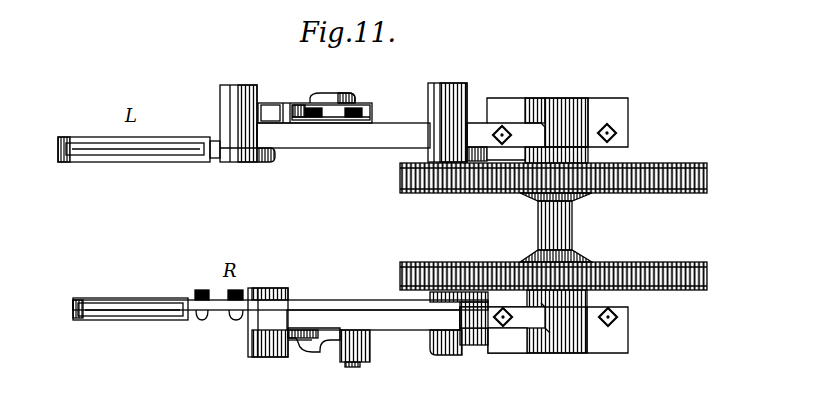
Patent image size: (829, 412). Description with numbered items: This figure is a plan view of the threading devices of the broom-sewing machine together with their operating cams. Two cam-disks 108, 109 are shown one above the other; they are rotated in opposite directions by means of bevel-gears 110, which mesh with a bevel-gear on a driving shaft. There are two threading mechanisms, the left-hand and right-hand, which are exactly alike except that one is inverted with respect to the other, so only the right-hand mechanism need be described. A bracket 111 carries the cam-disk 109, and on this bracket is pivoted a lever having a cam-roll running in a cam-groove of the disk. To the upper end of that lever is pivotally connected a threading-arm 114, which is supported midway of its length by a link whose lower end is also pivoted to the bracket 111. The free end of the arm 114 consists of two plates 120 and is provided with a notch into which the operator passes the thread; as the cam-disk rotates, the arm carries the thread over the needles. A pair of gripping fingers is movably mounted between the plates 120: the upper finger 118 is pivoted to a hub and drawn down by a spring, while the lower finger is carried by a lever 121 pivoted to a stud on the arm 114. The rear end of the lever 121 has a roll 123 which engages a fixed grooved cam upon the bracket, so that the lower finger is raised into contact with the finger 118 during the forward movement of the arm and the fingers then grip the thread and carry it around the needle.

The cam-disk 108 is at (709, 179).
The cam-disk 109 is at (710, 277).
The bevel-gears 110 is at (578, 198).
The bracket 111 is at (388, 134).
The threading-arm 114 is at (337, 308).
The finger 118 is at (110, 313).
The plates 120 is at (136, 300).
The lever 121 is at (322, 353).
The roll 123 is at (362, 352).